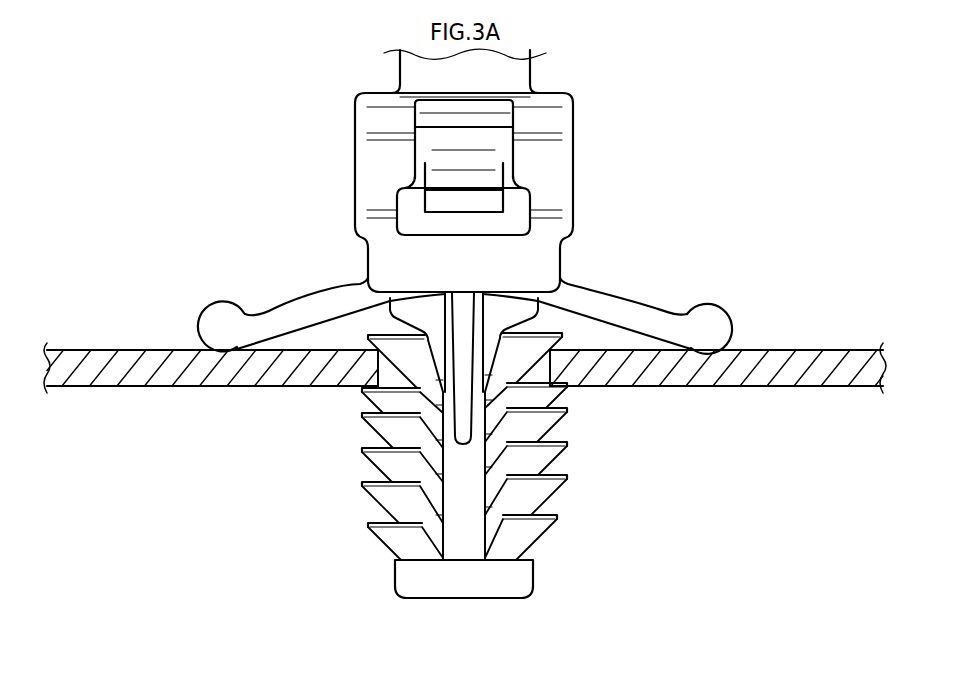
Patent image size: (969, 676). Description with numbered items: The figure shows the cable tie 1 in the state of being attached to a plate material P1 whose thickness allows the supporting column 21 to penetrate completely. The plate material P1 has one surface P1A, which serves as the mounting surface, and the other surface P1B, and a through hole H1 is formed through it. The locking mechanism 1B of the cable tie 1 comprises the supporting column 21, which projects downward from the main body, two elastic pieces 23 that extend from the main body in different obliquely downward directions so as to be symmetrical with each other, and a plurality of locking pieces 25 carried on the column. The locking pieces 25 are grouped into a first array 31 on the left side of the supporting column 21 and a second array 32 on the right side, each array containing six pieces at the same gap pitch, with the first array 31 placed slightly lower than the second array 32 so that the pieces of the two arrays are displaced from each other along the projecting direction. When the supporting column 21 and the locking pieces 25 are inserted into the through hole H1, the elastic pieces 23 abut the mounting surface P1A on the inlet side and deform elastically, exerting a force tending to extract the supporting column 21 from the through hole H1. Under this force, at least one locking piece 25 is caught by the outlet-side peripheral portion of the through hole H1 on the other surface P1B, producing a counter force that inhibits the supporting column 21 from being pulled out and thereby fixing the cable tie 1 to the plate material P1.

The cable tie 1 is at (607, 64).
The locking mechanism 1B is at (634, 285).
The elastic piece 23 is at (212, 313).
The first array 31 is at (341, 438).
The second array 32 is at (593, 446).
The locking piece 25 is at (385, 535).
The supporting column 21 is at (463, 588).
The through hole H1 is at (546, 368).
The plate material P1 is at (465, 368).
The one surface (mounting surface) P1A is at (798, 349).
The other surface P1B is at (792, 387).